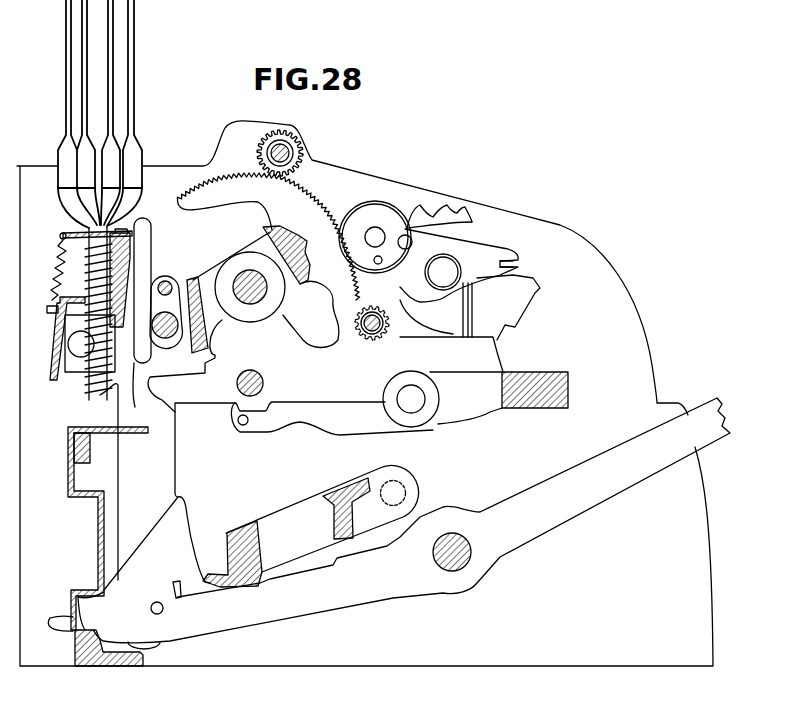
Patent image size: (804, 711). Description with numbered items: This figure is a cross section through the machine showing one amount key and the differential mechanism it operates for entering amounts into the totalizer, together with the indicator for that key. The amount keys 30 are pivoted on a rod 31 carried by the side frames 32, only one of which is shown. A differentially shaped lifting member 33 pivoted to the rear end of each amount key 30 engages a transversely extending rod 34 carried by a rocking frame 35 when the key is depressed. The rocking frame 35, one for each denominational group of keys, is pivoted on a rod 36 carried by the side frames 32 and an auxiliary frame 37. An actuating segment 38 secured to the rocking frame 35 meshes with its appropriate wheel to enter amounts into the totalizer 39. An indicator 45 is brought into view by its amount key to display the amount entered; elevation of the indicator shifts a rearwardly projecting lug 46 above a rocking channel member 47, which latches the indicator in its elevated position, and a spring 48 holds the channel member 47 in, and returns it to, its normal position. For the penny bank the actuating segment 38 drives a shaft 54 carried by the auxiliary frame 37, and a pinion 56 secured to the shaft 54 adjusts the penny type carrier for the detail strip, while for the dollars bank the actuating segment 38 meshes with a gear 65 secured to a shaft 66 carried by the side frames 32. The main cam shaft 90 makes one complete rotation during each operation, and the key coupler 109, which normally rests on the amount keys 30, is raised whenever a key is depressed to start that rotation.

The amount key 30 is at (605, 456).
The rod 31 is at (448, 570).
The side frame 32 is at (623, 297).
The lifting member 33 is at (173, 450).
The rod 34 is at (170, 310).
The rocking frame 35 is at (215, 273).
The rod 36 is at (240, 300).
The auxiliary frame 37 is at (318, 392).
The actuating segment 38 is at (196, 186).
The totalizer 39 is at (448, 237).
The indicator 45 is at (136, 111).
The lug 46 is at (88, 405).
The channel member 47 is at (57, 329).
The spring 48 is at (60, 253).
The shaft 54 is at (366, 335).
The pinion 56 is at (381, 338).
The gear 65 is at (291, 131).
The shaft 66 is at (293, 147).
The main cam shaft 90 is at (255, 373).
The key coupler 109 is at (292, 500).